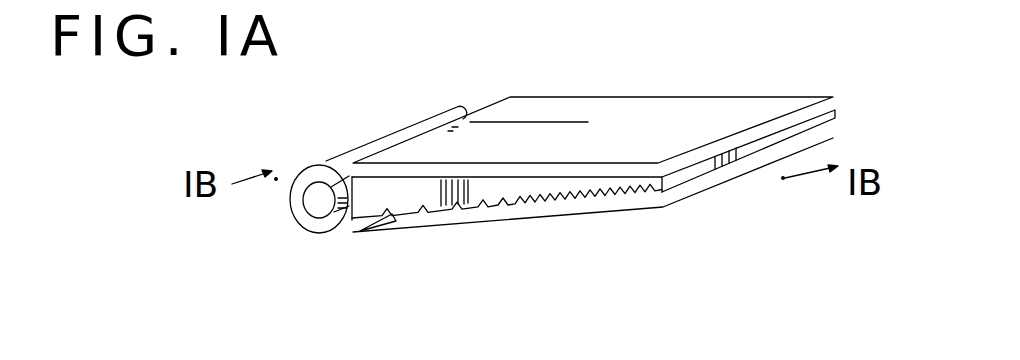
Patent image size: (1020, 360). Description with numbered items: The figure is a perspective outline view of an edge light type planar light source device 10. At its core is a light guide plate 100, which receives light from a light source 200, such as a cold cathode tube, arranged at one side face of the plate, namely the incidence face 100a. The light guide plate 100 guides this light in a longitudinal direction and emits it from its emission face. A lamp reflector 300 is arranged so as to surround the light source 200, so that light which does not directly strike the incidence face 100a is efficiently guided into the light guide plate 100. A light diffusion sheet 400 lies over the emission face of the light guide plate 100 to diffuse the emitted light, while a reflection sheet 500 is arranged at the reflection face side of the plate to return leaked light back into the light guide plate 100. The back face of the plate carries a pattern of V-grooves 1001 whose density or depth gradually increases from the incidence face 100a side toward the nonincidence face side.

The edge light type planar light source device 10 is at (581, 90).
The light guide plate 100 is at (512, 190).
The incidence face 100a is at (352, 206).
The V-grooves 1001 is at (385, 210).
The light source 200 is at (318, 207).
The lamp reflector 300 is at (343, 162).
The light diffusion sheet 400 is at (675, 108).
The reflection sheet 500 is at (743, 173).